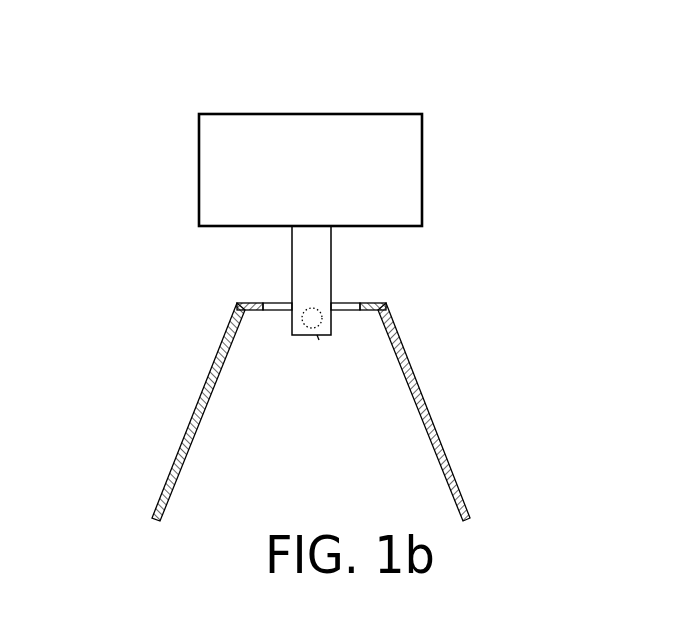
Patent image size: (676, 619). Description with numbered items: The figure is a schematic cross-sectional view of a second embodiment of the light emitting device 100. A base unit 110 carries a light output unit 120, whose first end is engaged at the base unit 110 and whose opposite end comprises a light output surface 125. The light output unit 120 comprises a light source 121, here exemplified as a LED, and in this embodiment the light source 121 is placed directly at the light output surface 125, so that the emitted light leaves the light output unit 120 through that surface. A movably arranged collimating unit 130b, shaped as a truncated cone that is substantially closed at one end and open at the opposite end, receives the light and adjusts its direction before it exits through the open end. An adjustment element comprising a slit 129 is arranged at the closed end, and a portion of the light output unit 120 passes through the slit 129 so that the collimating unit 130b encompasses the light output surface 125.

The light emitting device 100 is at (276, 270).
The base unit 110 is at (387, 155).
The light output unit 120 is at (336, 249).
The light source 121 is at (312, 320).
The light output surface 125 is at (318, 336).
The slit 129 is at (276, 306).
The collimating unit 130b is at (177, 430).